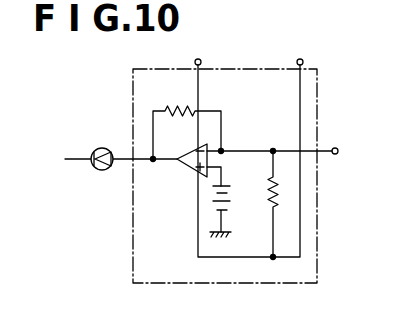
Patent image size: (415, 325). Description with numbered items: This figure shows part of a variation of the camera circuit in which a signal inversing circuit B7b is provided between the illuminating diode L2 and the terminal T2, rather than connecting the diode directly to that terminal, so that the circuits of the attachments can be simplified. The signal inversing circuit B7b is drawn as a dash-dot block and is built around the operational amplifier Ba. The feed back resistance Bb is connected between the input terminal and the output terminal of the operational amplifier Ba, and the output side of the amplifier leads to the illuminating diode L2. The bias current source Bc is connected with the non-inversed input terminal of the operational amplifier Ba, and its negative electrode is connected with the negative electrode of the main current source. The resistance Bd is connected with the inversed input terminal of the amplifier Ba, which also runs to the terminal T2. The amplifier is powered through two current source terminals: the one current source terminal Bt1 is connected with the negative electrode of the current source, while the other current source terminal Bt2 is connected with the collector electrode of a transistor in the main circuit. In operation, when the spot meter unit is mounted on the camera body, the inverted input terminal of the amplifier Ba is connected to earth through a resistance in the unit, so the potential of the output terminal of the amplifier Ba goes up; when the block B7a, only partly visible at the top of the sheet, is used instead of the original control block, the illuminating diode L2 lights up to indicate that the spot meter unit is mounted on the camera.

The signal inversing circuit B7b is at (228, 283).
The block B7a is at (343, 5).
The current source terminal Bt1 is at (201, 61).
The current source terminal Bt2 is at (303, 61).
The illuminating diode L2 is at (100, 170).
The feed back resistance Bb is at (175, 107).
The operational amplifier Ba is at (182, 165).
The bias current source Bc is at (228, 194).
The resistance Bd is at (265, 196).
The terminal T2 is at (349, 152).